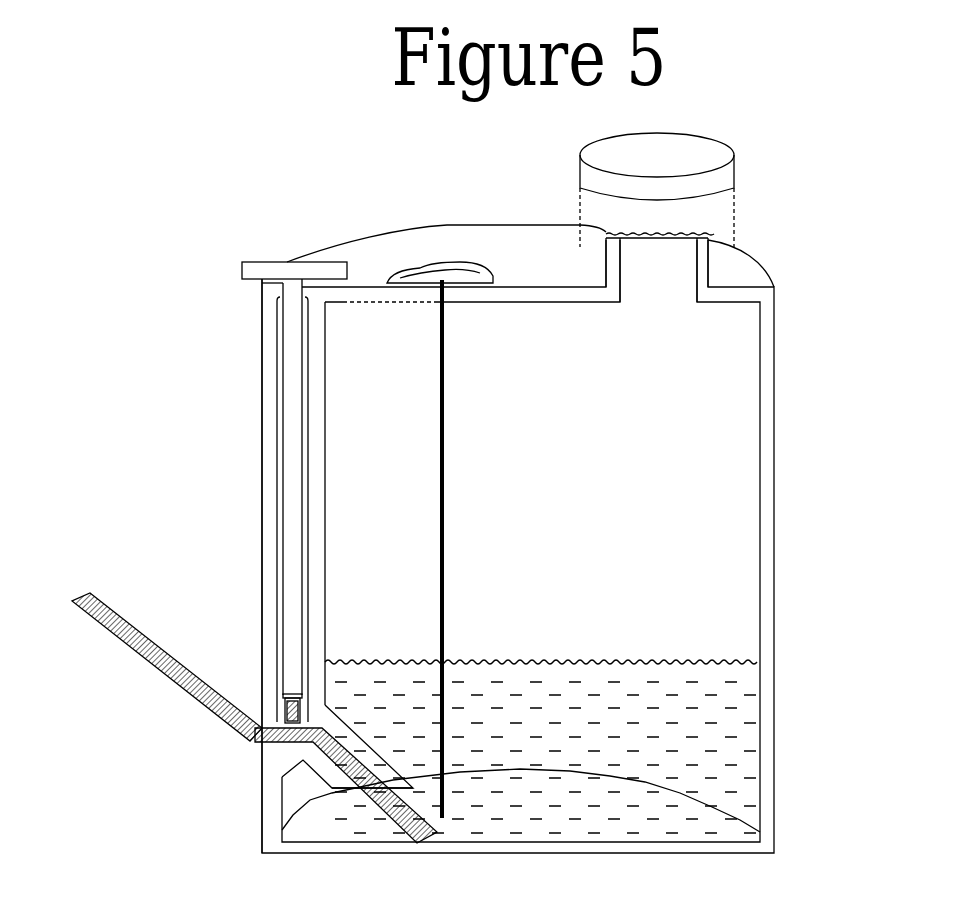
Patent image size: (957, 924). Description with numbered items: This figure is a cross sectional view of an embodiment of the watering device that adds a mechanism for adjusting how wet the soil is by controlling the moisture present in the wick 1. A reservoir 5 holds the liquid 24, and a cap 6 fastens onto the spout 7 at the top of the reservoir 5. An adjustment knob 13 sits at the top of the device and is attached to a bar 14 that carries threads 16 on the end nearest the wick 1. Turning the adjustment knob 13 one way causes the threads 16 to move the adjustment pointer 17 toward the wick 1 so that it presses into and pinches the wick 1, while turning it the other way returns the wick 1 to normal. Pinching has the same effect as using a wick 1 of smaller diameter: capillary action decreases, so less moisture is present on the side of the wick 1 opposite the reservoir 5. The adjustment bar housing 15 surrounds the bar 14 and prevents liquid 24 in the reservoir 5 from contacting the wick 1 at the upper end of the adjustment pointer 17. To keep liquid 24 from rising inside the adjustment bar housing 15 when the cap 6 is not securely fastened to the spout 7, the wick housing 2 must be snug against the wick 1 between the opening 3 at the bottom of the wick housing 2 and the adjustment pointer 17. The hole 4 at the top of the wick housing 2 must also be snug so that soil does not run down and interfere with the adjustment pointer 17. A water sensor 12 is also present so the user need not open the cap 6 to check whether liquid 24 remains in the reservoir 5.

The wick 1 is at (193, 693).
The wick housing 2 is at (350, 788).
The opening 3 is at (353, 790).
The hole 4 is at (257, 752).
The reservoir 5 is at (680, 542).
The cap 6 is at (742, 148).
The spout 7 is at (672, 265).
The water sensor 12 is at (447, 267).
The adjustment knob 13 is at (262, 270).
The bar 14 is at (290, 515).
The adjustment bar housing 15 is at (315, 560).
The threads 16 is at (285, 697).
The adjustment pointer 17 is at (272, 715).
The liquid 24 is at (723, 722).